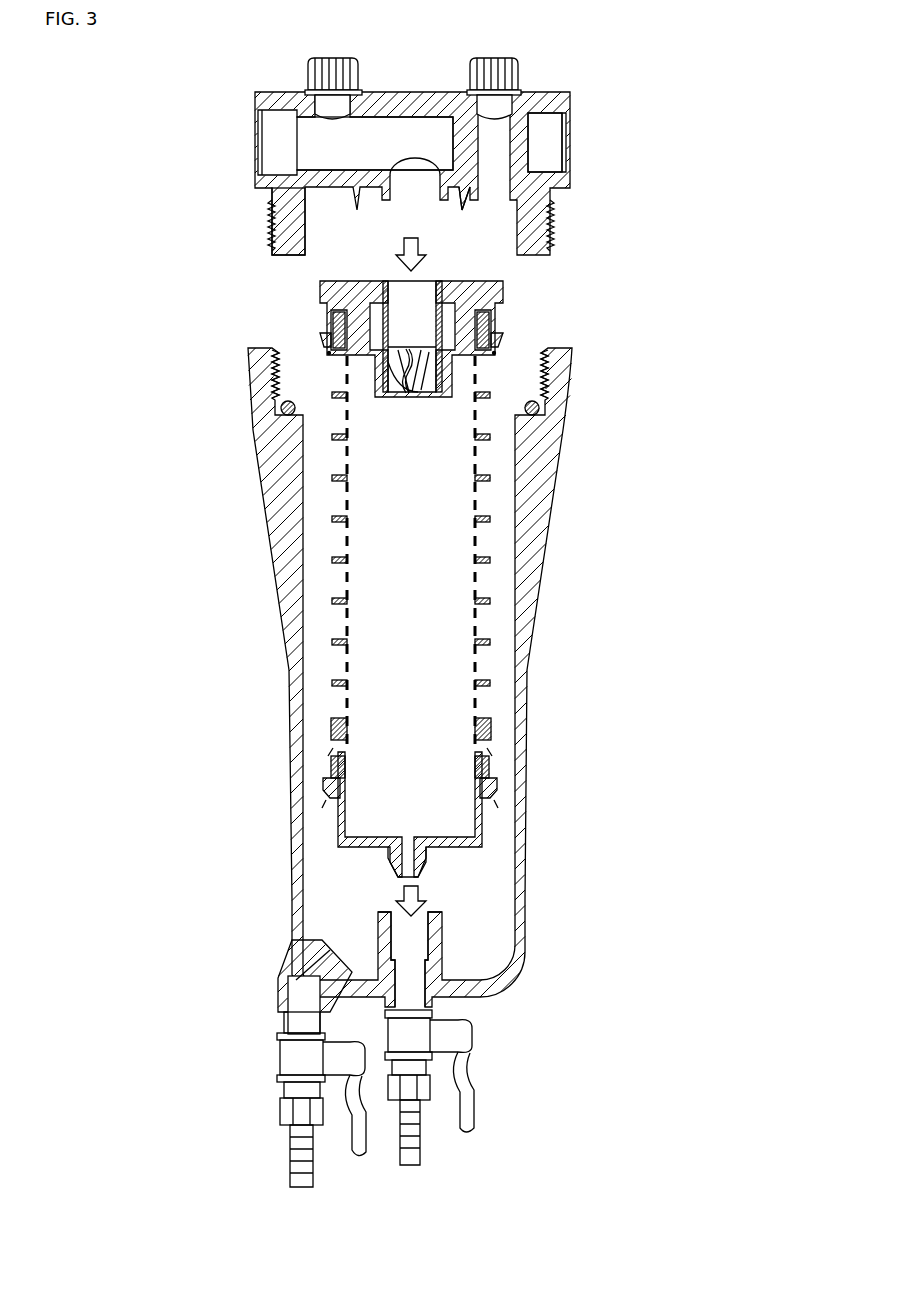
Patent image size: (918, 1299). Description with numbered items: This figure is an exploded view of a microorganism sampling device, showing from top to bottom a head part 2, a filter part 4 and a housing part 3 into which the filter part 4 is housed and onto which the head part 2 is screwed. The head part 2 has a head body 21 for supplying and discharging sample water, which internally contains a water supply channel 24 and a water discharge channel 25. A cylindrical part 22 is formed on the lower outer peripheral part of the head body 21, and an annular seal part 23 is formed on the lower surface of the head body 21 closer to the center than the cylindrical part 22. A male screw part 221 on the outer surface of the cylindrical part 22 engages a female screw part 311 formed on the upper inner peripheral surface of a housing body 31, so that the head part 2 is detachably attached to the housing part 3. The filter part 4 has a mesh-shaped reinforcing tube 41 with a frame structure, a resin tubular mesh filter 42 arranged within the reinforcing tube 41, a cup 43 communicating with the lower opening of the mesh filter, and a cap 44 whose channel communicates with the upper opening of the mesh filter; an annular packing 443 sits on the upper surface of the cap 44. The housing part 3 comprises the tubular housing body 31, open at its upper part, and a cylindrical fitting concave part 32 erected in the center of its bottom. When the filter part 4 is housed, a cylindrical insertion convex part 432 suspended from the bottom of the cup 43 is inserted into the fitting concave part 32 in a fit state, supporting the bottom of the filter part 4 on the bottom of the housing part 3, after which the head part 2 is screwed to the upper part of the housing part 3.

The head part 2 is at (434, 155).
The head body 21 is at (290, 100).
The cylindrical part 22 is at (290, 213).
The male screw part 221 is at (272, 226).
The annular seal part 23 is at (470, 197).
The water supply channel 24 is at (374, 137).
The water discharge channel 25 is at (520, 130).
The filter part 4 is at (417, 583).
The annular packing 443 is at (322, 292).
The cap 44 is at (335, 325).
The reinforcing tube 41 is at (480, 477).
The tubular mesh filter 42 is at (478, 538).
The cup 43 is at (480, 815).
The insertion convex part 432 is at (418, 860).
The housing part 3 is at (357, 767).
The housing body 31 is at (292, 665).
The female screw part 311 is at (270, 370).
The fitting concave part 32 is at (380, 940).